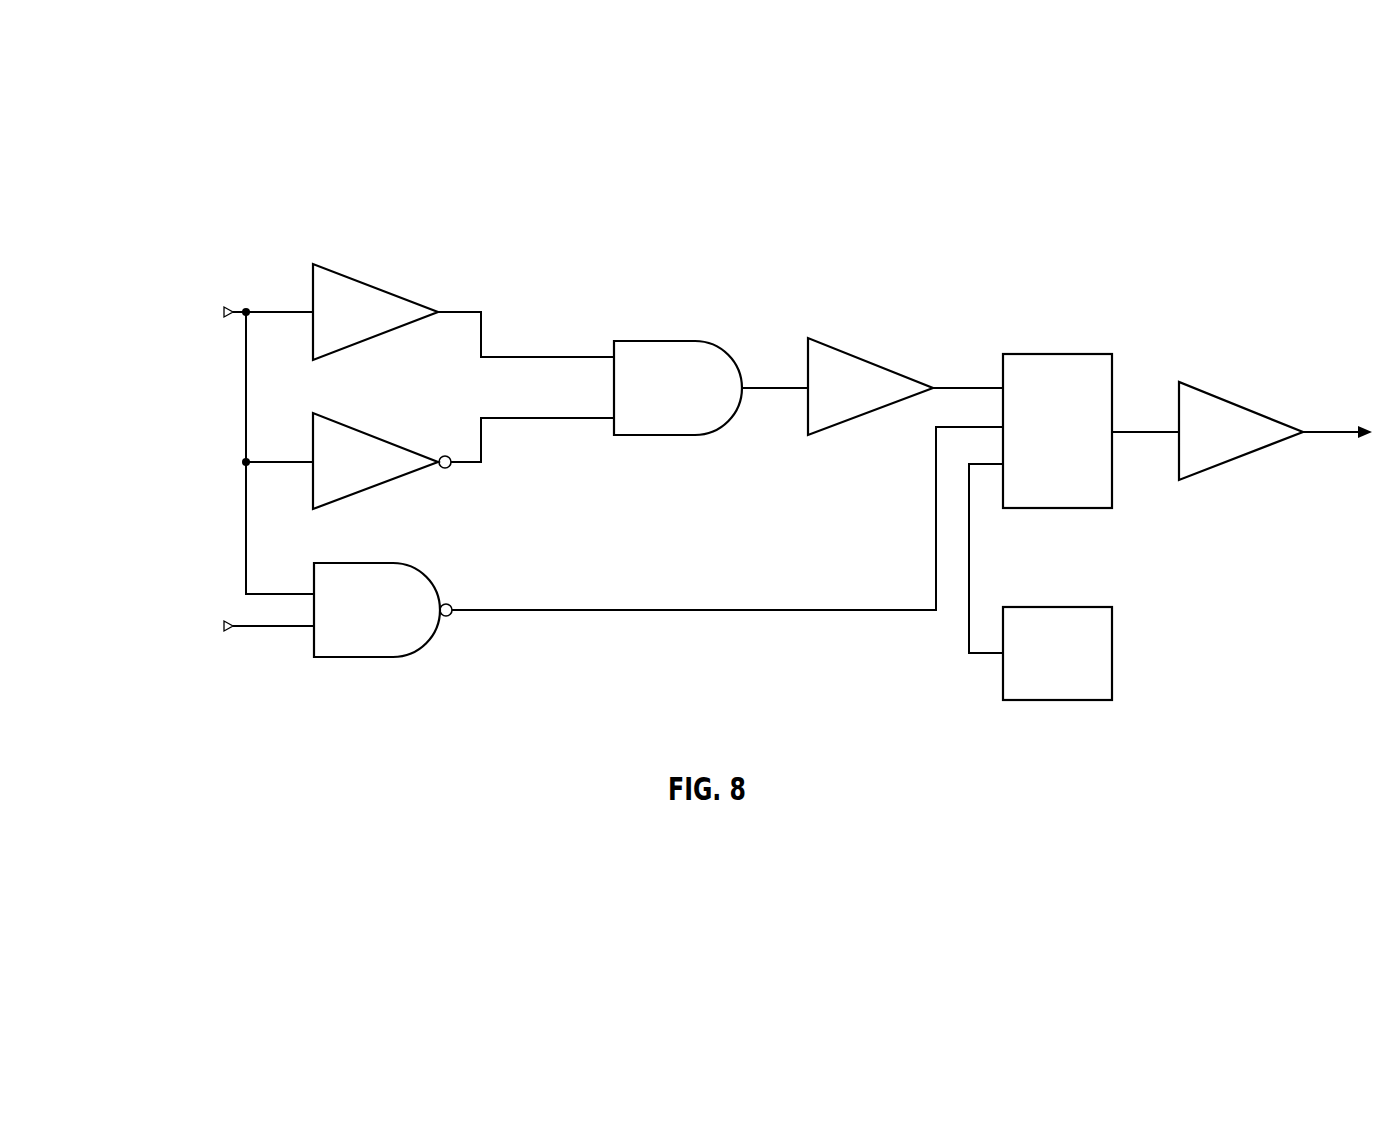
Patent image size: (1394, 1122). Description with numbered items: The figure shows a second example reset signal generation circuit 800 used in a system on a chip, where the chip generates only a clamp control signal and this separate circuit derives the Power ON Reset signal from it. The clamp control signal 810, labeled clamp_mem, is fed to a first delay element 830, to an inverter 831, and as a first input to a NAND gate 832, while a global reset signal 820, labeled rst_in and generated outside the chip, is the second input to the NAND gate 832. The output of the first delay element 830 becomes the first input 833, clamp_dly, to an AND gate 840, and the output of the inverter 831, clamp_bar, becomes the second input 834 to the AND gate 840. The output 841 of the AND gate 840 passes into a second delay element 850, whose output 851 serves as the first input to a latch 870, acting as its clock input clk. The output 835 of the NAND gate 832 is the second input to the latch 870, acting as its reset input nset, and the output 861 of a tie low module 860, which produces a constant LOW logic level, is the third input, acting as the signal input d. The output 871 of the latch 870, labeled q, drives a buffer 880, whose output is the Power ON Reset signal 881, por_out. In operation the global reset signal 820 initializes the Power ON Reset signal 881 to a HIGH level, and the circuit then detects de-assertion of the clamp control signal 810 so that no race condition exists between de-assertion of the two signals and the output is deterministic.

The reset signal generation circuit 800 is at (882, 244).
The clamp control signal 810 is at (88, 293).
The global reset signal 820 is at (172, 612).
The first delay element 830 is at (377, 289).
The inverter 831 is at (377, 485).
The NAND gate 832 is at (363, 562).
The first input to the AND gate 833 is at (553, 323).
The second input to the AND gate 834 is at (595, 457).
The output of the NAND gate 835 is at (688, 608).
The AND gate 840 is at (663, 341).
The output of the AND gate 841 is at (765, 386).
The second delay element 850 is at (875, 365).
The output of the second delay element 851 is at (957, 386).
The tie low module 860 is at (1057, 702).
The output of the tie low module 861 is at (969, 542).
The latch 870 is at (1097, 354).
The output of the latch 871 is at (1137, 431).
The buffer 880 is at (1243, 455).
The Power ON Reset signal 881 is at (1330, 392).